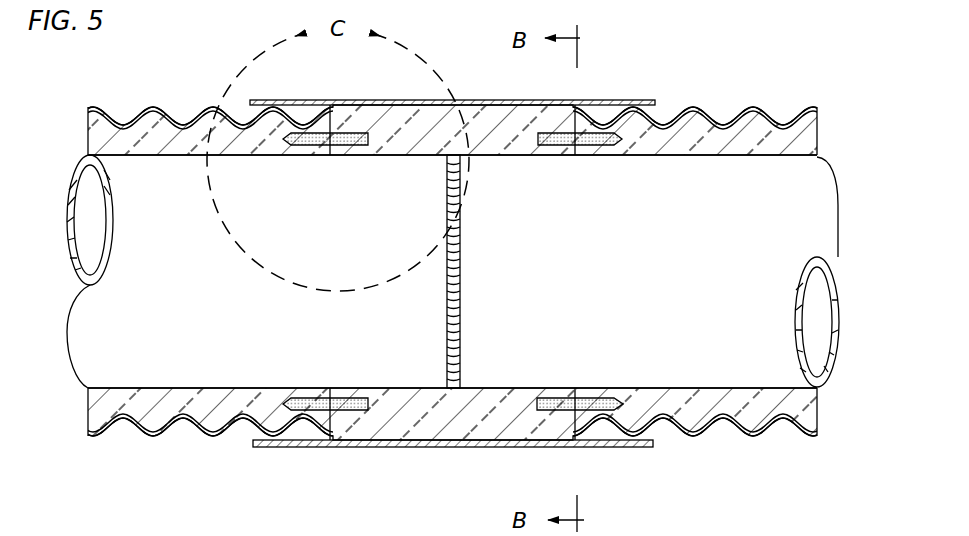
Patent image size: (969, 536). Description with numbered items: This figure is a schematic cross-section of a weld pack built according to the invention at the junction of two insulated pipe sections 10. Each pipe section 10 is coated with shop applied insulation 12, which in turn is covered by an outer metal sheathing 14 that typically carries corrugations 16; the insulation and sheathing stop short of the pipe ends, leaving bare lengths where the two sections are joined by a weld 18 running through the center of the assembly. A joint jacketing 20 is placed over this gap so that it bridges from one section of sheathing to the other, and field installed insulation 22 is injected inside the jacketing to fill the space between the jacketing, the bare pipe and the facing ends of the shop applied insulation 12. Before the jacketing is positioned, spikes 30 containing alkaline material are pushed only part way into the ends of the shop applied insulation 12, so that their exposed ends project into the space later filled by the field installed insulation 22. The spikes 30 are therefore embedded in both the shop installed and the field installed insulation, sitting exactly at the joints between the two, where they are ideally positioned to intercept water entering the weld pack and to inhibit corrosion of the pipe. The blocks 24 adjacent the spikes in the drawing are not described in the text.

The pipe section 10 is at (818, 150).
The shop applied insulation 12 is at (698, 125).
The outer metal sheathing 14 is at (156, 104).
The corrugations 16 is at (167, 440).
The weld 18 is at (459, 274).
The joint jacketing 20 is at (512, 100).
The field installed insulation 22 is at (430, 420).
The rib block 24 is at (335, 443).
The spikes 30 is at (305, 147).